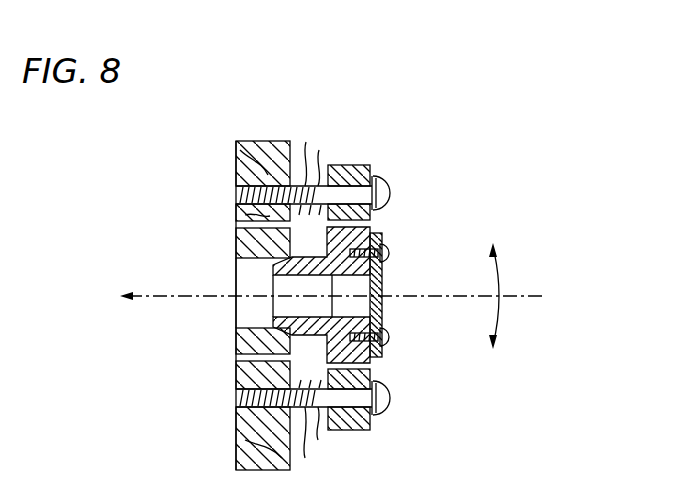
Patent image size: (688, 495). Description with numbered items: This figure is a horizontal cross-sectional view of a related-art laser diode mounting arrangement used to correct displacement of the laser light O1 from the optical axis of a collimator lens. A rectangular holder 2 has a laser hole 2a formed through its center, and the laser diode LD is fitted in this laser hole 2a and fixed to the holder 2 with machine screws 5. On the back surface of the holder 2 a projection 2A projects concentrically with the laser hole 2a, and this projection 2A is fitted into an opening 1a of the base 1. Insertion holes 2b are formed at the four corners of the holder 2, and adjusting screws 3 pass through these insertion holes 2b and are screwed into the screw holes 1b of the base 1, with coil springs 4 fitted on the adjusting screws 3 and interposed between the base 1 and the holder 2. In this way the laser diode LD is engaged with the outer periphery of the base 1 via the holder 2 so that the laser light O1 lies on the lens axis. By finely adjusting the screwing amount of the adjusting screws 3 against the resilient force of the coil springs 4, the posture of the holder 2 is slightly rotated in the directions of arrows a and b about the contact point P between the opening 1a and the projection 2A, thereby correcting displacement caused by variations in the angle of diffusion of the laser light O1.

The base 1 is at (262, 150).
The opening 1a is at (243, 277).
The screw holes 1b is at (238, 195).
The holder 2 is at (301, 286).
The laser hole 2a is at (273, 317).
The insertion holes 2b is at (333, 165).
The projection 2A is at (237, 345).
The adjusting screws 3 is at (393, 194).
The coil springs 4 is at (310, 300).
The machine screws 5 is at (391, 253).
The contact point P is at (243, 243).
The laser diode LD is at (384, 284).
The laser light O1 is at (150, 293).
The arrow direction a is at (492, 284).
The arrow direction b is at (491, 361).